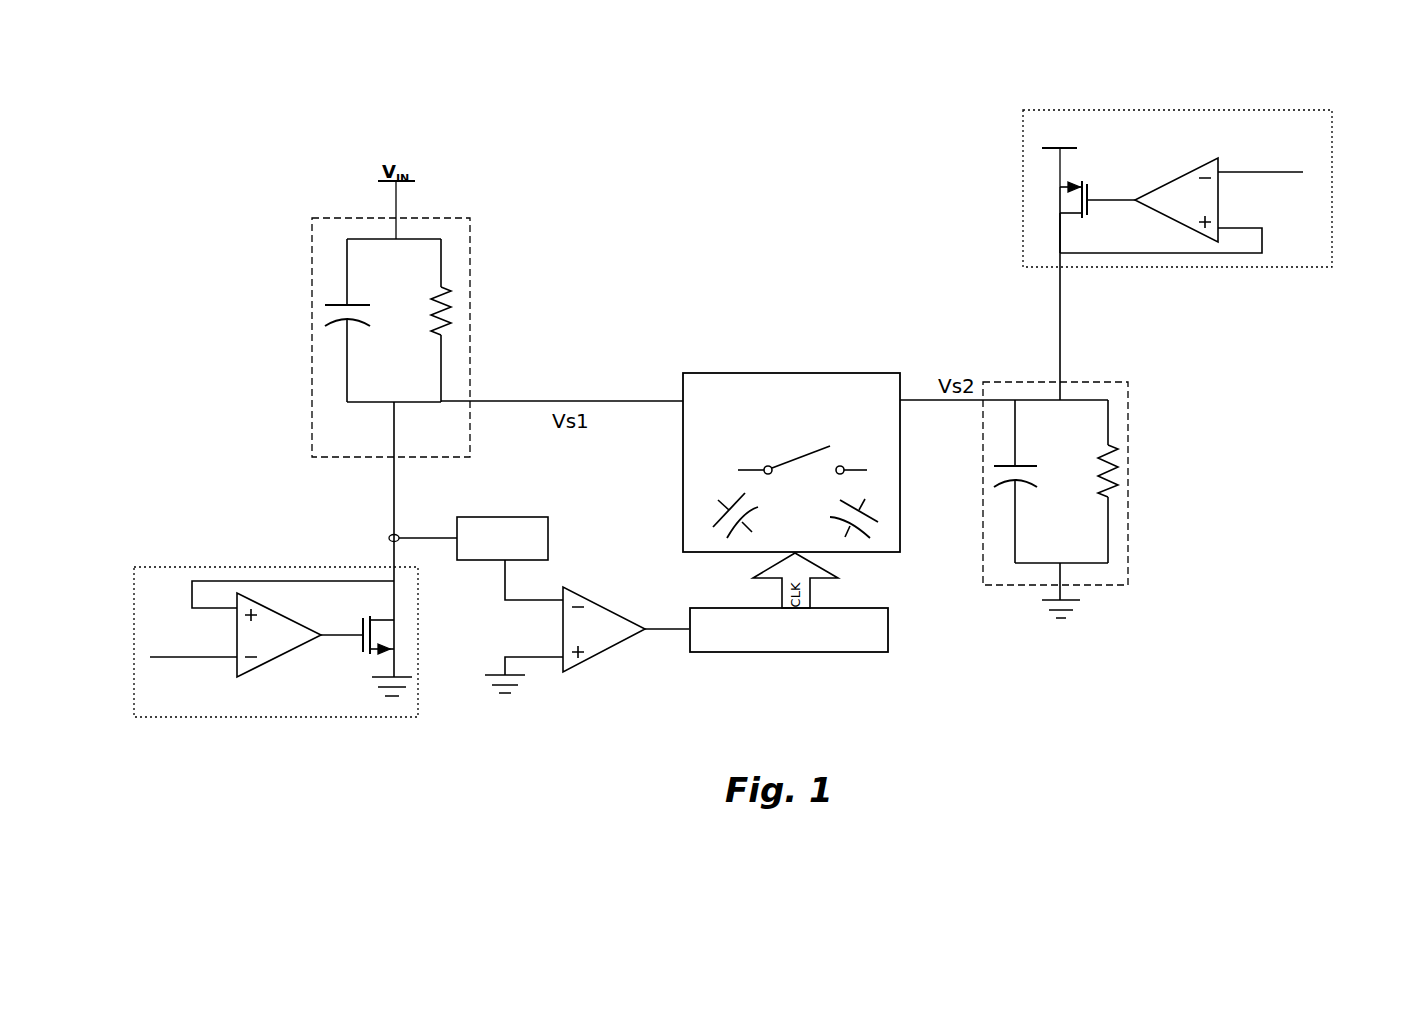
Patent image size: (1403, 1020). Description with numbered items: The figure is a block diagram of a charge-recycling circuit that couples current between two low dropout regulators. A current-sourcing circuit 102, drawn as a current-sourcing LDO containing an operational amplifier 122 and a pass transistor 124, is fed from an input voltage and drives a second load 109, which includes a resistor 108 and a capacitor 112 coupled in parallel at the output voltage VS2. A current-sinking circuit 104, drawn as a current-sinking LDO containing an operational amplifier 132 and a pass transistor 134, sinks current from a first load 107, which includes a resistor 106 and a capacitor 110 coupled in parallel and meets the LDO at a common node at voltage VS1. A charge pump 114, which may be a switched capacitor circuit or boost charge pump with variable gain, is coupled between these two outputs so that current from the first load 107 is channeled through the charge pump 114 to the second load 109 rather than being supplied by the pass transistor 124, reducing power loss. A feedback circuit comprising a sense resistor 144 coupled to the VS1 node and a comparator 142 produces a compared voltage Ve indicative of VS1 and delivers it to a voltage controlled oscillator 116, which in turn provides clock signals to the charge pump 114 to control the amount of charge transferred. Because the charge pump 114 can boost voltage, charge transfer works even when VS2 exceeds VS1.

The current-sourcing circuit 102 is at (1190, 221).
The current-sinking circuit 104 is at (319, 670).
The resistor 106 is at (450, 313).
The first load 107 is at (405, 350).
The resistor 108 is at (1112, 460).
The second load 109 is at (1075, 512).
The capacitor 110 is at (323, 322).
The capacitor 112 is at (995, 467).
The charge pump 114 is at (900, 552).
The voltage controlled oscillator 116 is at (888, 640).
The operational amplifier 122 is at (1218, 180).
The pass transistor 124 is at (1078, 208).
The operational amplifier 132 is at (303, 642).
The pass transistor 134 is at (388, 637).
The comparator 142 is at (620, 640).
The sense resistor 144 is at (548, 530).